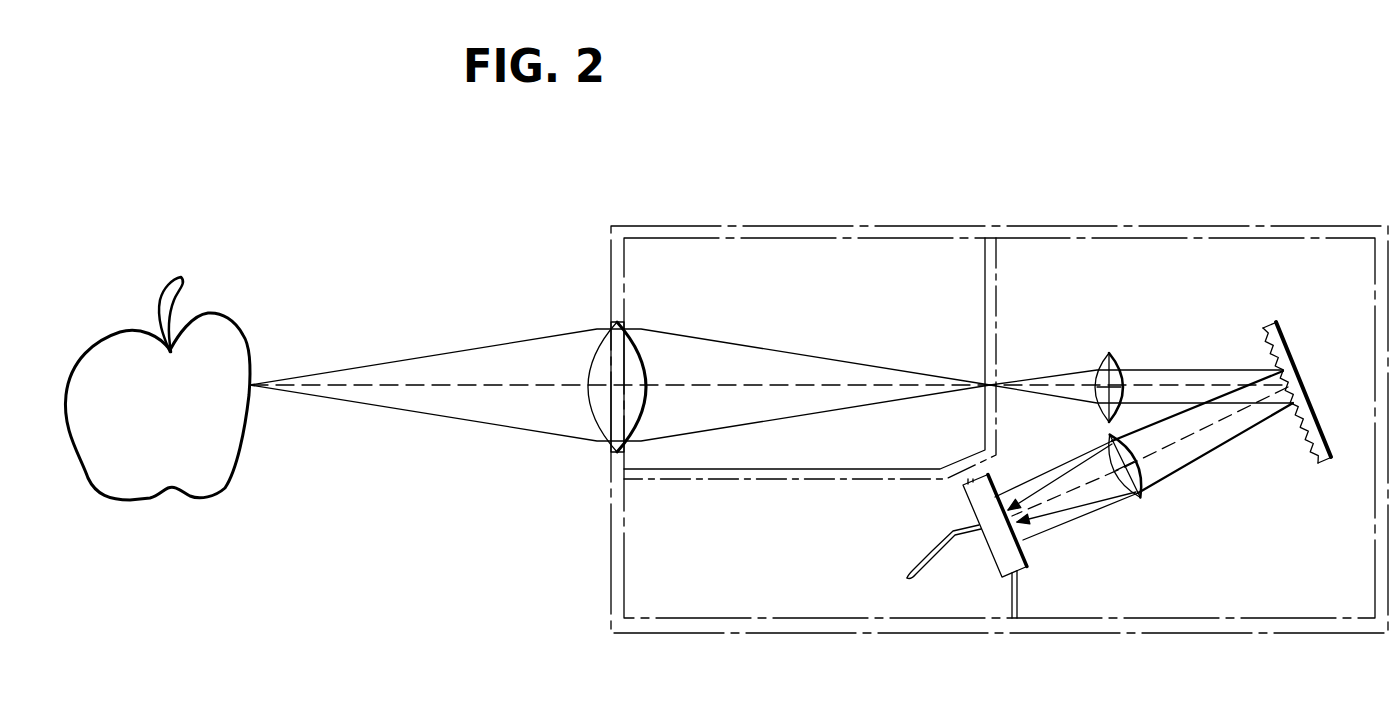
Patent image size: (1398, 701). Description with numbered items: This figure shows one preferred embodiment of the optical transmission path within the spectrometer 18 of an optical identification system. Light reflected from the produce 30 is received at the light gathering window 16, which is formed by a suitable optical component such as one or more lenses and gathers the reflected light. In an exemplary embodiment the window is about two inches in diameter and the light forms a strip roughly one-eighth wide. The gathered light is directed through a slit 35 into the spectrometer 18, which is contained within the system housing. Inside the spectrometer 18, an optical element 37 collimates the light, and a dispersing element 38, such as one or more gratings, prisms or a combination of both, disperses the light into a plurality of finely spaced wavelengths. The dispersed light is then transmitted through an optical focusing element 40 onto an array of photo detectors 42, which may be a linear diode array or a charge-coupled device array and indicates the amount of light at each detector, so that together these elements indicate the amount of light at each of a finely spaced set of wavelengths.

The spectrometer 18 is at (1167, 226).
The produce 30 is at (230, 338).
The light gathering window 16 is at (600, 352).
The slit 35 is at (973, 372).
The optical element 37 is at (1108, 352).
The dispersing element 38 is at (1273, 328).
The optical focusing element 40 is at (1140, 497).
The array of photo detectors 42 is at (1015, 560).